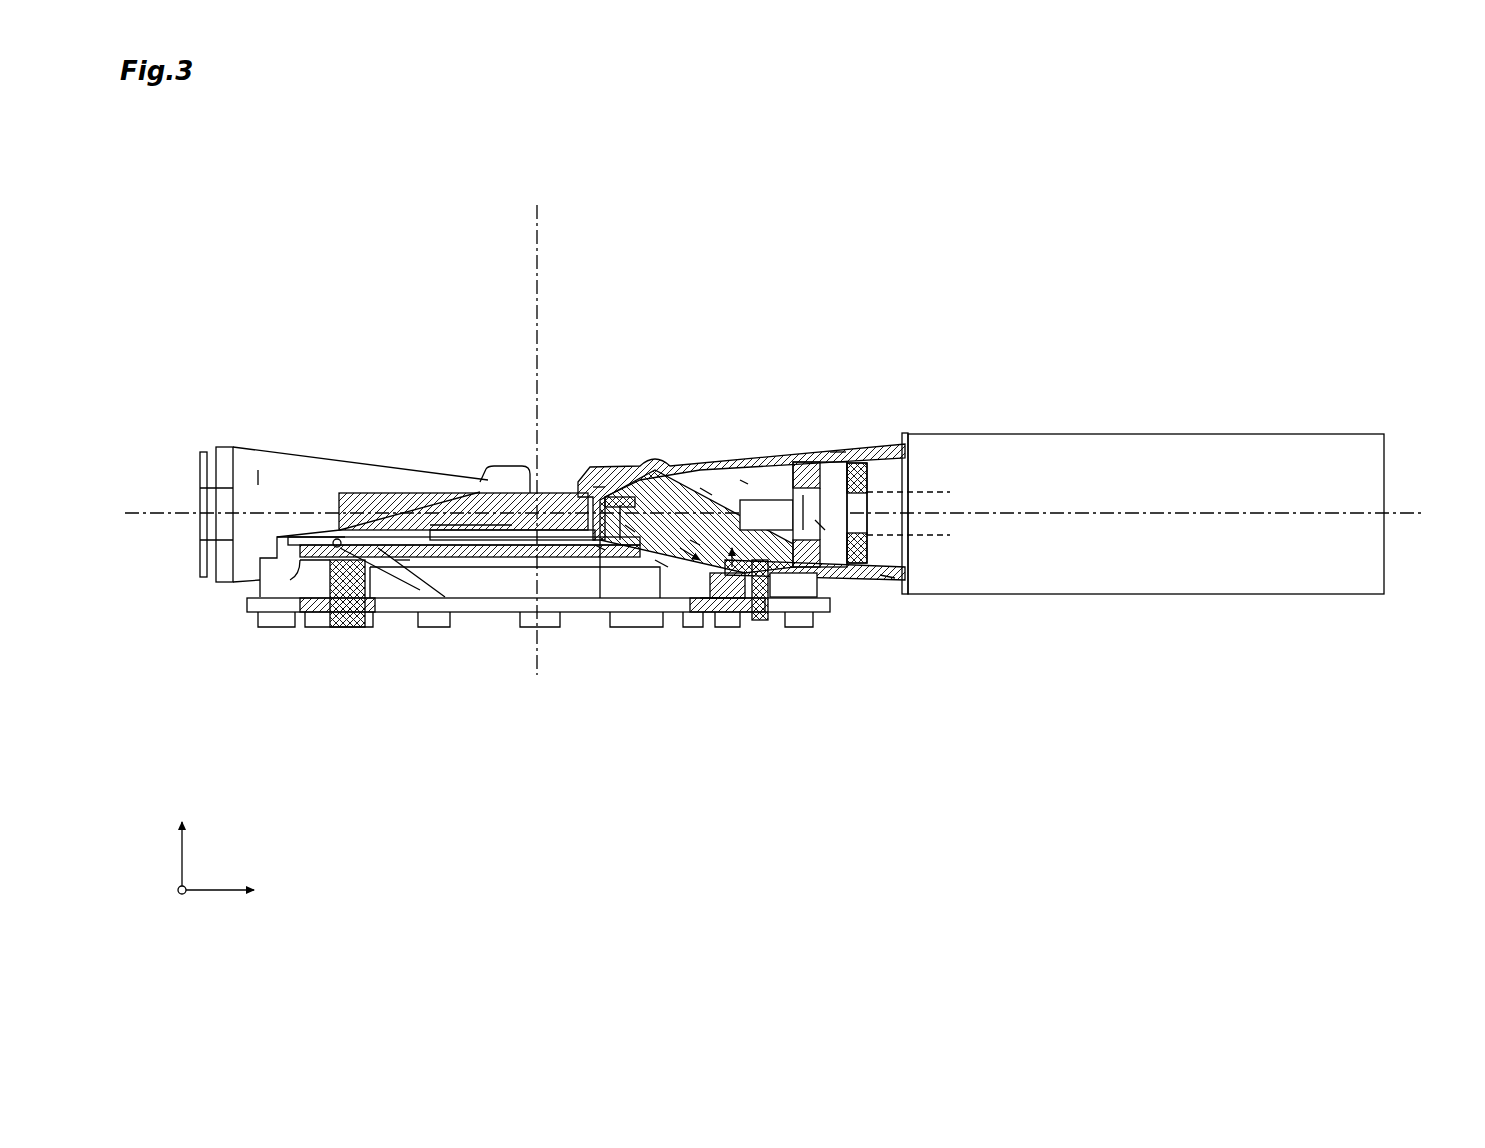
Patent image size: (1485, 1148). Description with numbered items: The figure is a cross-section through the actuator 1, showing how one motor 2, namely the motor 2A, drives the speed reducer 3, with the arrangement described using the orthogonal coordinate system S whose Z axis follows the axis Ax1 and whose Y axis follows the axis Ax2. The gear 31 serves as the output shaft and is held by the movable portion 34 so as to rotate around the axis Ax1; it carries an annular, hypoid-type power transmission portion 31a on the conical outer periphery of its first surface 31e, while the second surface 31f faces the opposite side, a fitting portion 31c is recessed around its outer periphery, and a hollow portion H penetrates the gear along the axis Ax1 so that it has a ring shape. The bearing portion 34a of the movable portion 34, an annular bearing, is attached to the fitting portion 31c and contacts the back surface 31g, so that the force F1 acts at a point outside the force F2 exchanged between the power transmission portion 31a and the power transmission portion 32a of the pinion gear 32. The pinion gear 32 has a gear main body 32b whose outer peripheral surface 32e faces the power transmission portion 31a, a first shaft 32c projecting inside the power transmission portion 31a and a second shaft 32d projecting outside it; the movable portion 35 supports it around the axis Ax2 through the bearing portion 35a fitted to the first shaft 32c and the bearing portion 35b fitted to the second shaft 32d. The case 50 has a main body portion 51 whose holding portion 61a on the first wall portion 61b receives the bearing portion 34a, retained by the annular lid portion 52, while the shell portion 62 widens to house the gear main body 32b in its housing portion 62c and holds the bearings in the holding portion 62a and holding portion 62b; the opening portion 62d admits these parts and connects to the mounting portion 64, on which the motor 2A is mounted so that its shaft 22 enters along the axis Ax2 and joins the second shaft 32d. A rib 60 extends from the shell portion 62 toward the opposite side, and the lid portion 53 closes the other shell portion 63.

The actuator 1 is at (308, 273).
The motor 2 is at (1154, 458).
The motor 2A is at (1308, 427).
The shaft 22 is at (922, 482).
The speed reducer 3 is at (774, 756).
The gear 31 is at (467, 536).
The power transmission portion 31a is at (660, 560).
The fitting portion 31c is at (353, 545).
The first surface 31e is at (300, 560).
The second surface 31f is at (402, 560).
The back surface 31g is at (710, 598).
The pinion gear 32 is at (726, 531).
The power transmission portion 32a is at (706, 490).
The gear main body 32b is at (693, 540).
The first shaft 32c is at (600, 545).
The second shaft 32d is at (820, 525).
The outer peripheral surface 32e is at (630, 530).
The movable portion 34 is at (754, 650).
The bearing portion 34a is at (742, 600).
The movable portion 35 is at (720, 403).
The bearing portion 35a is at (608, 482).
The bearing portion 35b is at (802, 468).
The case 50 is at (222, 442).
The main body portion 51 is at (307, 456).
The lid portion 52 is at (245, 620).
The lid portion 53 is at (198, 468).
The rib 60 is at (448, 493).
The holding portion 61a is at (350, 612).
The first wall portion 61b is at (782, 598).
The shell portion 62 is at (760, 478).
The holding portion 62a is at (605, 497).
The holding portion 62b is at (838, 452).
The housing portion 62c is at (745, 482).
The opening portion 62d is at (888, 580).
The shell portion 63 is at (258, 477).
The mounting portion 64 is at (858, 463).
The hollow portion H is at (510, 523).
The force F1 is at (800, 603).
The force F2 is at (693, 560).
The axis Ax1 is at (540, 425).
The axis Ax2 is at (787, 497).
The orthogonal coordinate system S is at (203, 893).